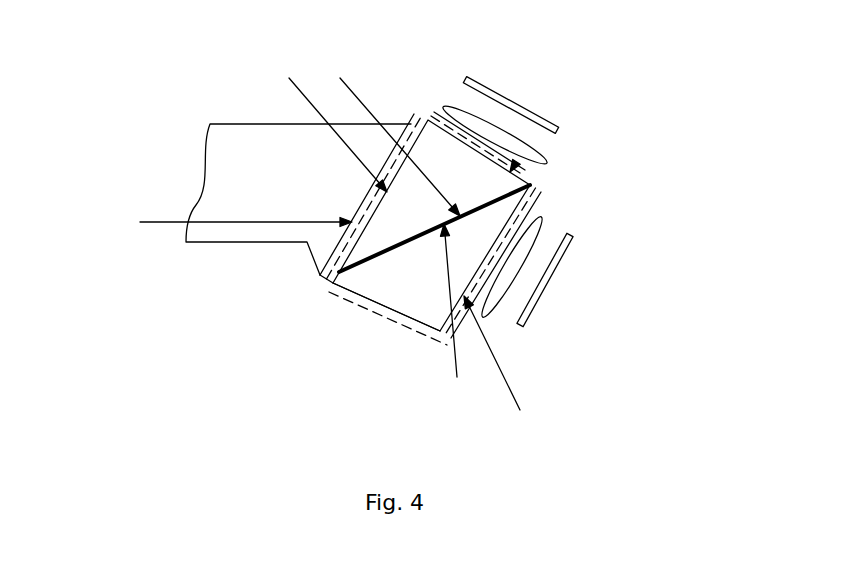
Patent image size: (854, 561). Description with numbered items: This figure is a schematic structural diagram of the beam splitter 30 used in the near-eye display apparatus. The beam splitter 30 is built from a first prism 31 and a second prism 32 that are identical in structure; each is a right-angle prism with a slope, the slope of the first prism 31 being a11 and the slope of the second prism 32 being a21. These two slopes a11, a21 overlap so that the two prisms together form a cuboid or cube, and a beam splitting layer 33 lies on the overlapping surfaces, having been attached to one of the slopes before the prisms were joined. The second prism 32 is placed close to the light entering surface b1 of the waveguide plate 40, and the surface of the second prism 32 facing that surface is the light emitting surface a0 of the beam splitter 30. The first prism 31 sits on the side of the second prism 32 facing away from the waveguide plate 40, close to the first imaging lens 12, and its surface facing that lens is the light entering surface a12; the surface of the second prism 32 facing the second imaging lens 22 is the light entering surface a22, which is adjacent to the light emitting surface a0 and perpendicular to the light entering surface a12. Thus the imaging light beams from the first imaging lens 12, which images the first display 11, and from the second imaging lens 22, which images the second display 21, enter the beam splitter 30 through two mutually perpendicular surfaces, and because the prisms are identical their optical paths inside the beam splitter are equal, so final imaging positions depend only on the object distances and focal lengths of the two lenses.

The waveguide plate 40 is at (248, 124).
The beam splitter 30 is at (333, 285).
The first prism 31 is at (420, 287).
The second prism 32 is at (442, 157).
The beam splitting layer 33 is at (410, 243).
The second display 21 is at (540, 113).
The second imaging lens 22 is at (547, 155).
The first imaging lens 12 is at (540, 223).
The first display 11 is at (537, 303).
The light emitting surface a0 is at (332, 124).
The slope of the second prism a21 is at (391, 136).
The light entering surface of the second prism a22 is at (517, 174).
The slope of the first prism a11 is at (454, 316).
The light entering surface of the first prism a12 is at (507, 363).
The light entering surface of the waveguide plate b1 is at (232, 224).